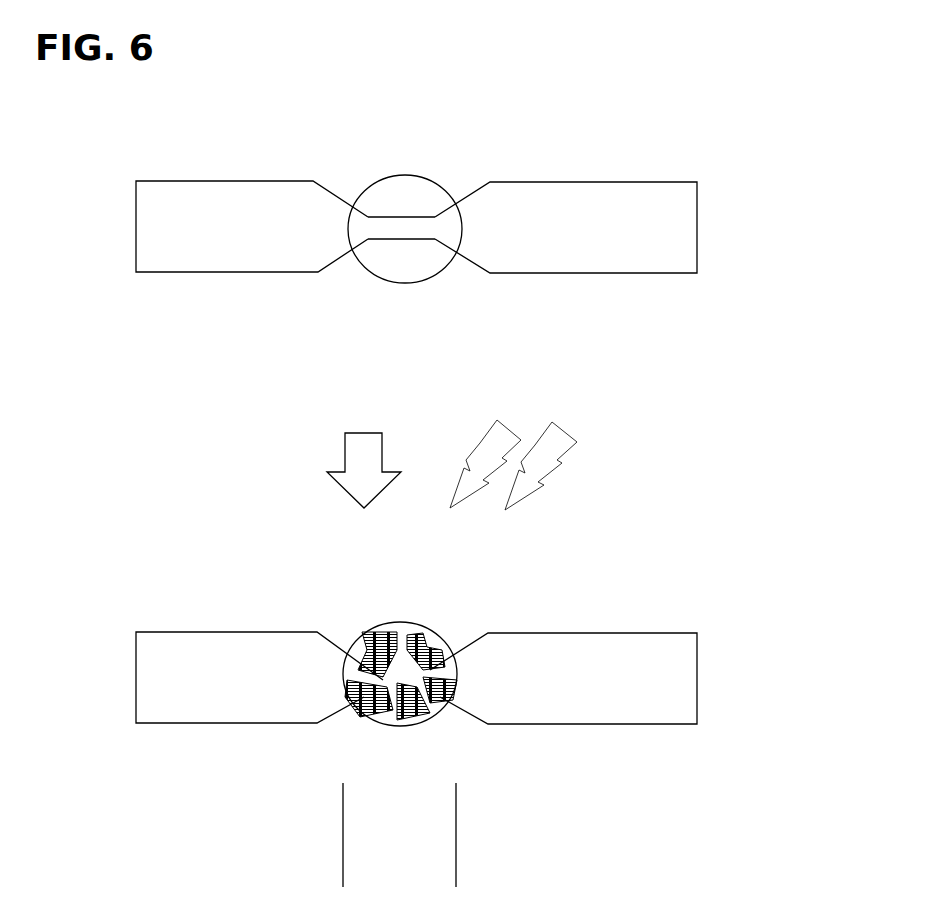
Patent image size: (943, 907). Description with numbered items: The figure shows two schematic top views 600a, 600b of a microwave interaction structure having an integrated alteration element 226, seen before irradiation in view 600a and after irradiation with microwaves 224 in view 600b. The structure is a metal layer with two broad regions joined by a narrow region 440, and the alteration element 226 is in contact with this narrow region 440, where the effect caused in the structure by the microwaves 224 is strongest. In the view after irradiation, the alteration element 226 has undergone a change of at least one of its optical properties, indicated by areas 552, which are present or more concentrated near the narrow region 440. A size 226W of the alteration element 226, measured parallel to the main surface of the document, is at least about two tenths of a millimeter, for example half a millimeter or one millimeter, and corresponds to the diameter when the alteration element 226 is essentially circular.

The schematic top view before irradiation 600a is at (403, 213).
The schematic top view after irradiation 600b is at (403, 662).
The narrow region 440 is at (411, 235).
The alteration element 226 is at (410, 283).
The microwaves 224 is at (562, 452).
The areas of optical change 552 is at (408, 642).
The size of the alteration element 226W is at (268, 835).